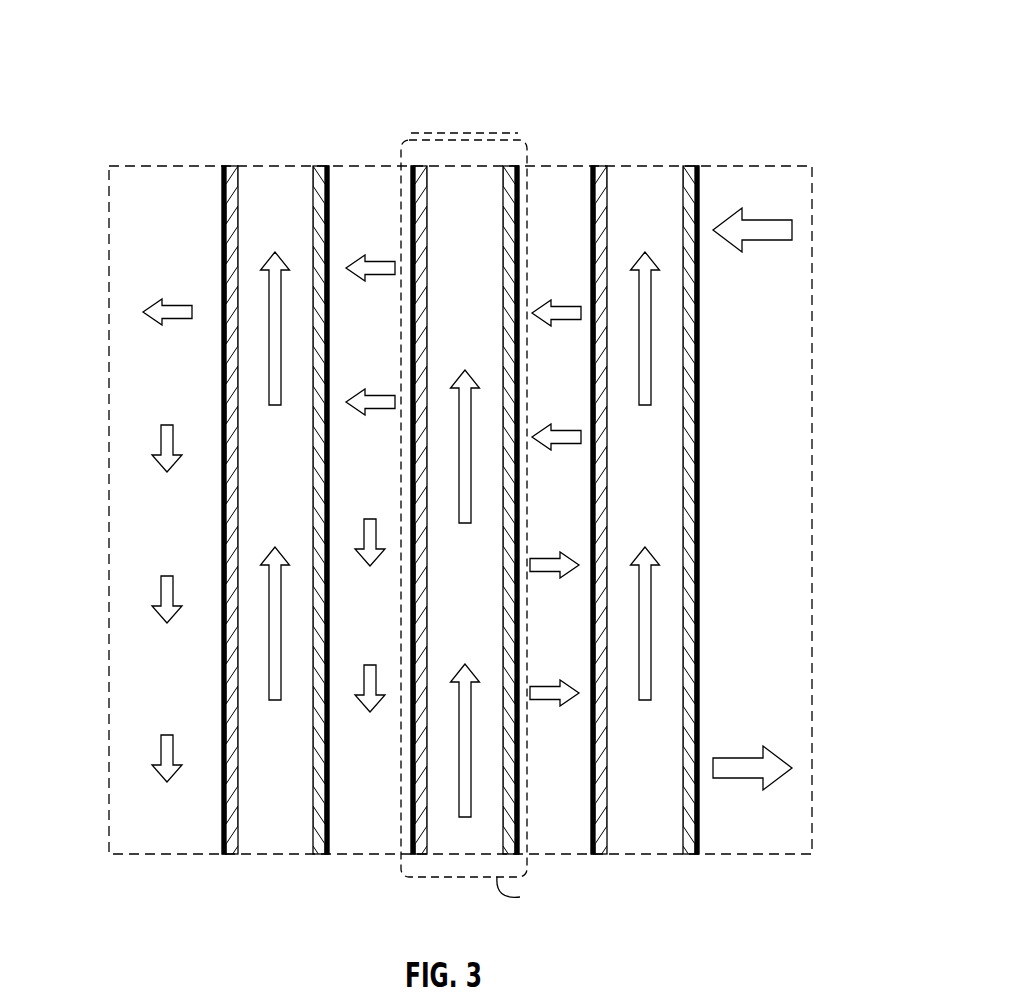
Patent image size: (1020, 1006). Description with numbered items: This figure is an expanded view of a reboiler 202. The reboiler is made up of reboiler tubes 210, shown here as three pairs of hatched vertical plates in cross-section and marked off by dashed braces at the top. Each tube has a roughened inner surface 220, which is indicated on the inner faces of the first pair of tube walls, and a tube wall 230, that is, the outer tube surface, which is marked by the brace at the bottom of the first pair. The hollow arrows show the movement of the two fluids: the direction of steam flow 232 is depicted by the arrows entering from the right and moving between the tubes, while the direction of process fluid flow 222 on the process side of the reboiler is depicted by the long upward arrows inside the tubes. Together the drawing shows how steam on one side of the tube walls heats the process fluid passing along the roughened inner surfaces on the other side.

The reboiler 202 is at (135, 43).
The reboiler tubes 210 is at (329, 166).
The roughened inner surface 220 is at (318, 818).
The process fluid flow 222 is at (648, 358).
The tube wall 230 is at (329, 855).
The steam flow 232 is at (562, 303).